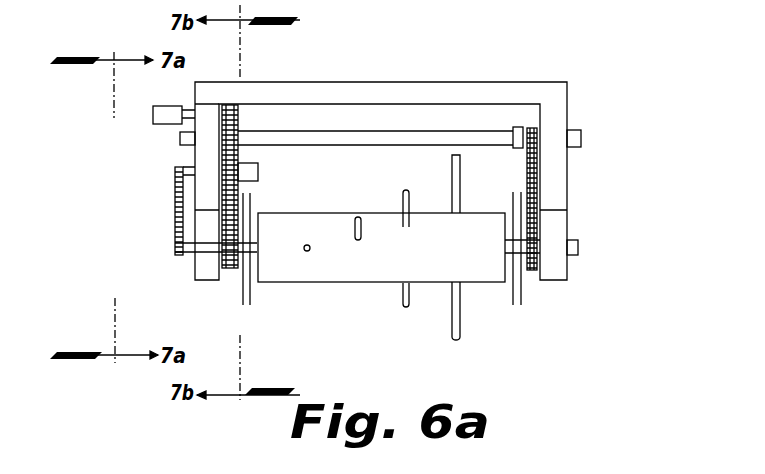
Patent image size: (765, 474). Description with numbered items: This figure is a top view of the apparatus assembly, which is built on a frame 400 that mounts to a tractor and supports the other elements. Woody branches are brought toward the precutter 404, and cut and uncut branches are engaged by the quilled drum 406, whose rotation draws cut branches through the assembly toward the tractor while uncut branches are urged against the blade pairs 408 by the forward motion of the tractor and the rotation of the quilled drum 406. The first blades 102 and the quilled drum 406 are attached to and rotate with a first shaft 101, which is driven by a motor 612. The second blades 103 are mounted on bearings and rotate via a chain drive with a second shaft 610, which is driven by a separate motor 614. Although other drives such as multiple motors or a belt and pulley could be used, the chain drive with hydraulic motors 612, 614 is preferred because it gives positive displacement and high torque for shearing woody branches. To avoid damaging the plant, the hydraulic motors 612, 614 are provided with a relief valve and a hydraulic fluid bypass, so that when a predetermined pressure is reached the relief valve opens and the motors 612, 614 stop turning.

The frame 400 is at (542, 68).
The second shaft 610 is at (361, 131).
The motor 614 is at (161, 125).
The motor 612 is at (260, 174).
The first shaft 101 is at (580, 247).
The second blades 103 is at (242, 289).
The first blades 102 is at (252, 292).
The blade pairs 408 is at (232, 300).
The quilled drum 406 is at (376, 288).
The precutter 404 is at (530, 293).